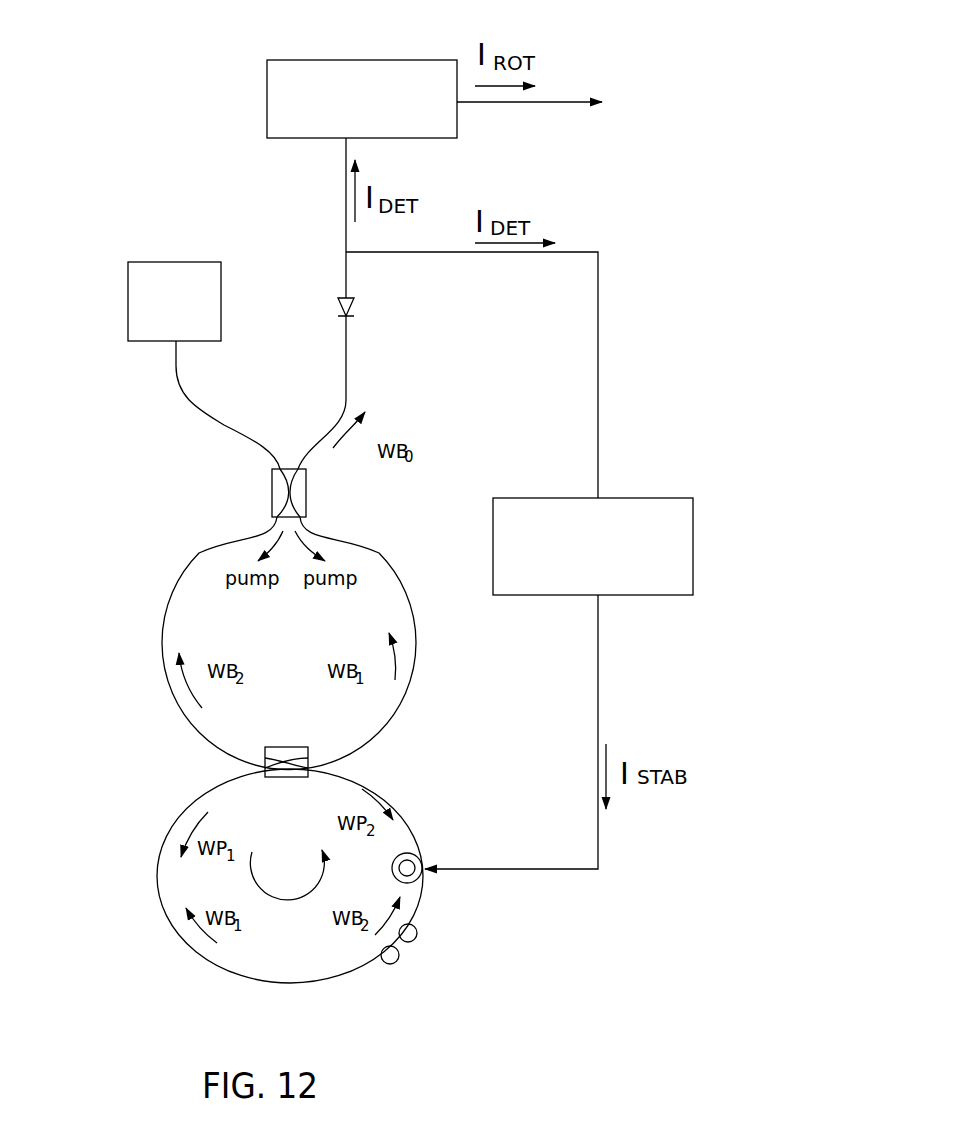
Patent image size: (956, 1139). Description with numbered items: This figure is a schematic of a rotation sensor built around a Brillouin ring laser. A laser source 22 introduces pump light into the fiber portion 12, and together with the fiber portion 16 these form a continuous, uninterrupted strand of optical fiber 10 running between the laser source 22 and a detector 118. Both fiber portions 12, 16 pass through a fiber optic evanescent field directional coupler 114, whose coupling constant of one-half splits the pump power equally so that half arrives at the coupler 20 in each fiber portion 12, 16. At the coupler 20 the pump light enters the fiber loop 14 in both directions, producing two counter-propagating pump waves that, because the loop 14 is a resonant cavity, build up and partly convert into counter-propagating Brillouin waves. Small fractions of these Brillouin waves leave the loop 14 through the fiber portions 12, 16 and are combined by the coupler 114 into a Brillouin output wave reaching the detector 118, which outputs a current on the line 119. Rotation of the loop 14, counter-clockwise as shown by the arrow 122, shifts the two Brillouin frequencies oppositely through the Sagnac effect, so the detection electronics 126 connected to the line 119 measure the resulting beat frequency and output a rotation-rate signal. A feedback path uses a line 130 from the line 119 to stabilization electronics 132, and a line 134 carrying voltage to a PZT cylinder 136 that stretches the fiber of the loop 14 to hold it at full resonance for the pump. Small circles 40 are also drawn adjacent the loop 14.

The detection electronics 126 is at (362, 60).
The detector output line 119 is at (346, 165).
The detector 118 is at (352, 311).
The line 130 is at (598, 404).
The stabilization electronics 132 is at (519, 498).
The line 134 is at (598, 707).
The PZT cylinder 136 is at (420, 852).
The laser source 22 is at (128, 272).
The optical fiber 10 is at (183, 400).
The fiber portion 12 is at (225, 427).
The fiber portion 16 is at (346, 403).
The fiber optic evanescent field directional coupler 114 is at (272, 490).
The coupler 20 is at (283, 747).
The fiber loop 14 is at (337, 975).
The arrow 122 is at (287, 903).
The loop support / PZT cylinder 40 is at (400, 947).